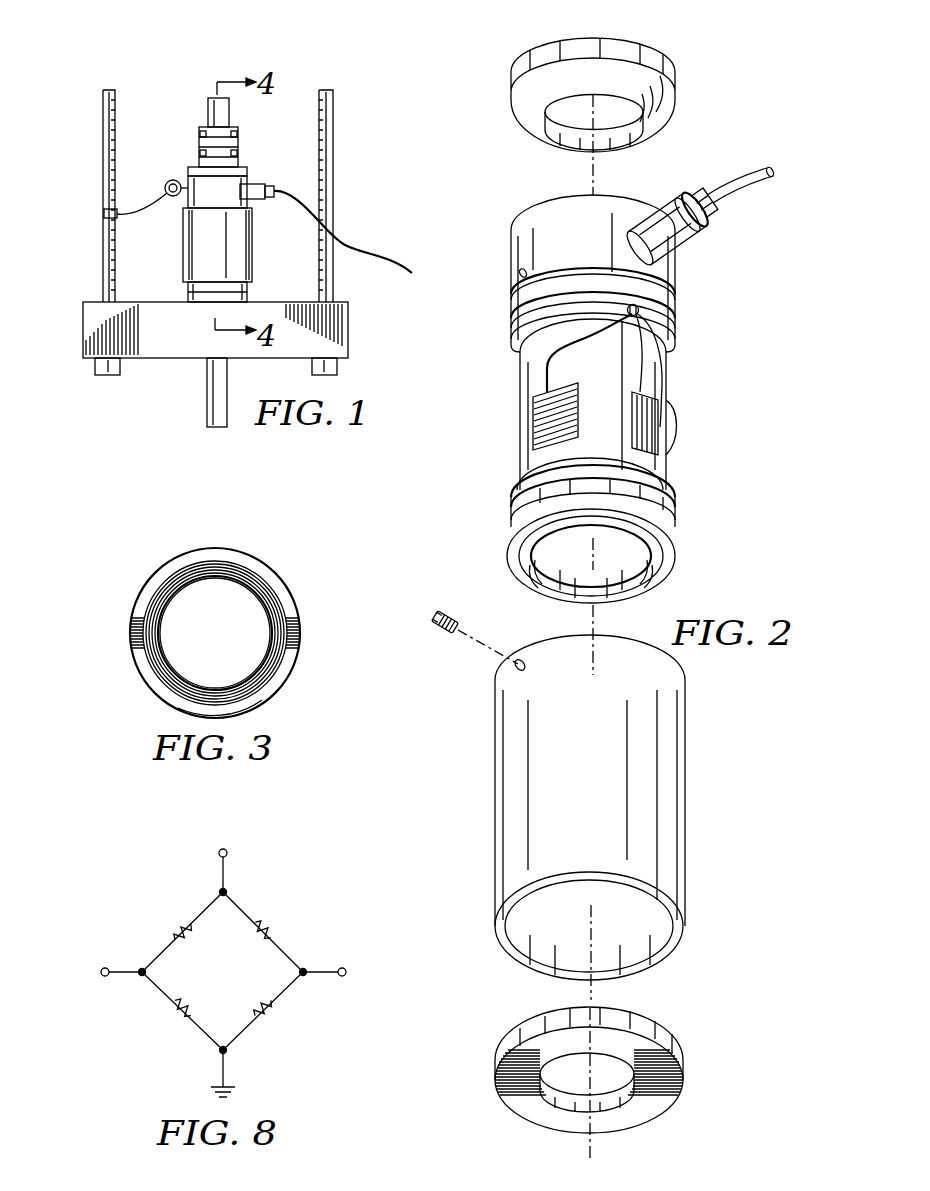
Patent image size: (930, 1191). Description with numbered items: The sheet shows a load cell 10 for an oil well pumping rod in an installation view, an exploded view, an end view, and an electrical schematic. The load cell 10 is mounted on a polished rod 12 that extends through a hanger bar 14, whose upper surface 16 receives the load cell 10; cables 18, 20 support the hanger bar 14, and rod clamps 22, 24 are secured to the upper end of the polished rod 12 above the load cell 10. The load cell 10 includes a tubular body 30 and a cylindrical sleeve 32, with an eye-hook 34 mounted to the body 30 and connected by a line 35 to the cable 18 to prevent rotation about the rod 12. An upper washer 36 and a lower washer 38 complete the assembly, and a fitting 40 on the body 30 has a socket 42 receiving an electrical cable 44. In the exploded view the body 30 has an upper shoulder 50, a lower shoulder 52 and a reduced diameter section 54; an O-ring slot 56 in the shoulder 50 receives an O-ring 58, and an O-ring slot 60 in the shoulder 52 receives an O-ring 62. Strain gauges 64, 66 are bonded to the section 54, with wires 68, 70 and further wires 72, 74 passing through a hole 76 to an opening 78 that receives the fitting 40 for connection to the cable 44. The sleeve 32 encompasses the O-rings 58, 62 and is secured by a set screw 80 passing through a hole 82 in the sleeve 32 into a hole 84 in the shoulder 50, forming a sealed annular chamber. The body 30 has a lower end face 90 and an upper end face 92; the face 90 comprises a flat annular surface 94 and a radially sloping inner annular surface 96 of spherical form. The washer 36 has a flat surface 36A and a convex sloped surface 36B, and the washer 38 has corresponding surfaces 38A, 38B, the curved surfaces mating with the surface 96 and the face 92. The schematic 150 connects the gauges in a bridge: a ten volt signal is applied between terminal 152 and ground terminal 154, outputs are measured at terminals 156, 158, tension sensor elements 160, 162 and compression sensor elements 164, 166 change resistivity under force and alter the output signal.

In FIG. 1, the load cell 10 is at (160, 250).
In FIG. 2, the load cell 10 is at (735, 370).
In FIG. 1, the polished rod 12 is at (207, 395).
In FIG. 1, the hanger bar 14 is at (348, 327).
In FIG. 1, the upper surface 16 is at (141, 302).
In FIG. 1, the cable 18 is at (103, 135).
In FIG. 1, the cable 20 is at (333, 136).
In FIG. 1, the rod clamp 22 is at (199, 133).
In FIG. 1, the rod clamp 24 is at (199, 153).
In FIG. 1, the tubular body 30 is at (209, 195).
In FIG. 3, the tubular body 30 is at (112, 595).
In FIG. 2, the tubular body 30 is at (488, 452).
In FIG. 1, the cylindrical sleeve 32 is at (252, 235).
In FIG. 2, the cylindrical sleeve 32 is at (495, 784).
In FIG. 1, the eye-hook 34 is at (170, 181).
In FIG. 1, the line 35 is at (104, 212).
In FIG. 1, the upper washer 36 is at (247, 170).
In FIG. 2, the upper washer 36 is at (511, 88).
In FIG. 2, the flat surface 36A is at (640, 55).
In FIG. 2, the convex sloped surface 36B is at (658, 128).
In FIG. 1, the lower washer 38 is at (247, 296).
In FIG. 2, the lower washer 38 is at (683, 1068).
In FIG. 2, the flat surface 38A is at (655, 1110).
In FIG. 2, the curved surface 38B is at (655, 1022).
In FIG. 1, the fitting 40 is at (258, 184).
In FIG. 2, the fitting 40 is at (664, 200).
In FIG. 1, the socket 42 is at (274, 191).
In FIG. 2, the socket 42 is at (709, 196).
In FIG. 1, the electrical cable 44 is at (346, 240).
In FIG. 2, the electrical cable 44 is at (742, 188).
In FIG. 2, the upper shoulder 50 is at (511, 250).
In FIG. 3, the lower shoulder 52 is at (289, 593).
In FIG. 2, the lower shoulder 52 is at (506, 545).
In FIG. 2, the reduced diameter section 54 is at (512, 490).
In FIG. 2, the O-ring slot 56 is at (511, 308).
In FIG. 2, the O-ring 58 is at (675, 300).
In FIG. 2, the O-ring slot 60 is at (508, 522).
In FIG. 2, the O-ring 62 is at (680, 520).
In FIG. 2, the strain gauge 64 is at (578, 426).
In FIG. 2, the strain gauge 66 is at (659, 450).
In FIG. 2, the wire 68 is at (567, 352).
In FIG. 2, the wire 70 is at (634, 363).
In FIG. 2, the wire 72 is at (512, 400).
In FIG. 2, the wire 74 is at (672, 416).
In FIG. 2, the hole 76 is at (661, 336).
In FIG. 2, the opening 78 is at (612, 240).
In FIG. 2, the set screw 80 is at (435, 617).
In FIG. 2, the hole 82 is at (512, 668).
In FIG. 2, the hole 84 is at (519, 268).
In FIG. 3, the lower end face 90 is at (226, 621).
In FIG. 2, the lower end face 90 is at (540, 610).
In FIG. 2, the upper end face 92 is at (532, 200).
In FIG. 3, the flat annular surface 94 is at (162, 571).
In FIG. 2, the flat annular surface 94 is at (665, 575).
In FIG. 3, the radially sloping inner annular surface 96 is at (270, 640).
In FIG. 2, the radially sloping inner annular surface 96 is at (640, 588).
In FIG. 8, the electrical schematic 150 is at (113, 866).
In FIG. 8, the terminal 152 is at (222, 872).
In FIG. 8, the ground terminal 154 is at (226, 1066).
In FIG. 8, the terminal 156 is at (104, 967).
In FIG. 8, the terminal 158 is at (343, 967).
In FIG. 8, the tension sensor element 160 is at (267, 922).
In FIG. 8, the tension sensor element 162 is at (178, 1020).
In FIG. 8, the compression sensor element 164 is at (178, 924).
In FIG. 8, the compression sensor element 166 is at (268, 1020).